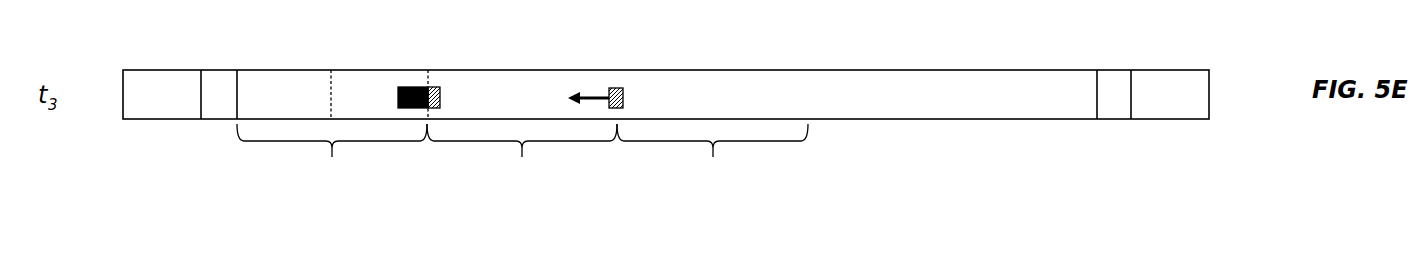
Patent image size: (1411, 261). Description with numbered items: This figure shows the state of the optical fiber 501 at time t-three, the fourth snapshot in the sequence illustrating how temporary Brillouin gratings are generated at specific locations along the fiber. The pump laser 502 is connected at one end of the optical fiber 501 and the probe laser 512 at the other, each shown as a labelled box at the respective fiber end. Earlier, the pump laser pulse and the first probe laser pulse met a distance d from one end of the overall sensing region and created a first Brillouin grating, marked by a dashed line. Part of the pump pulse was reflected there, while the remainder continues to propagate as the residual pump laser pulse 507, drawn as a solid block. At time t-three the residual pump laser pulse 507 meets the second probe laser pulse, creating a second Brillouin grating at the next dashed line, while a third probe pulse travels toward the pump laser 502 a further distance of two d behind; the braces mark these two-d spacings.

The optical fiber 501 is at (960, 127).
The pump laser 502 is at (162, 97).
The probe laser 512 is at (1172, 97).
The residual pump laser pulse 507 is at (411, 85).